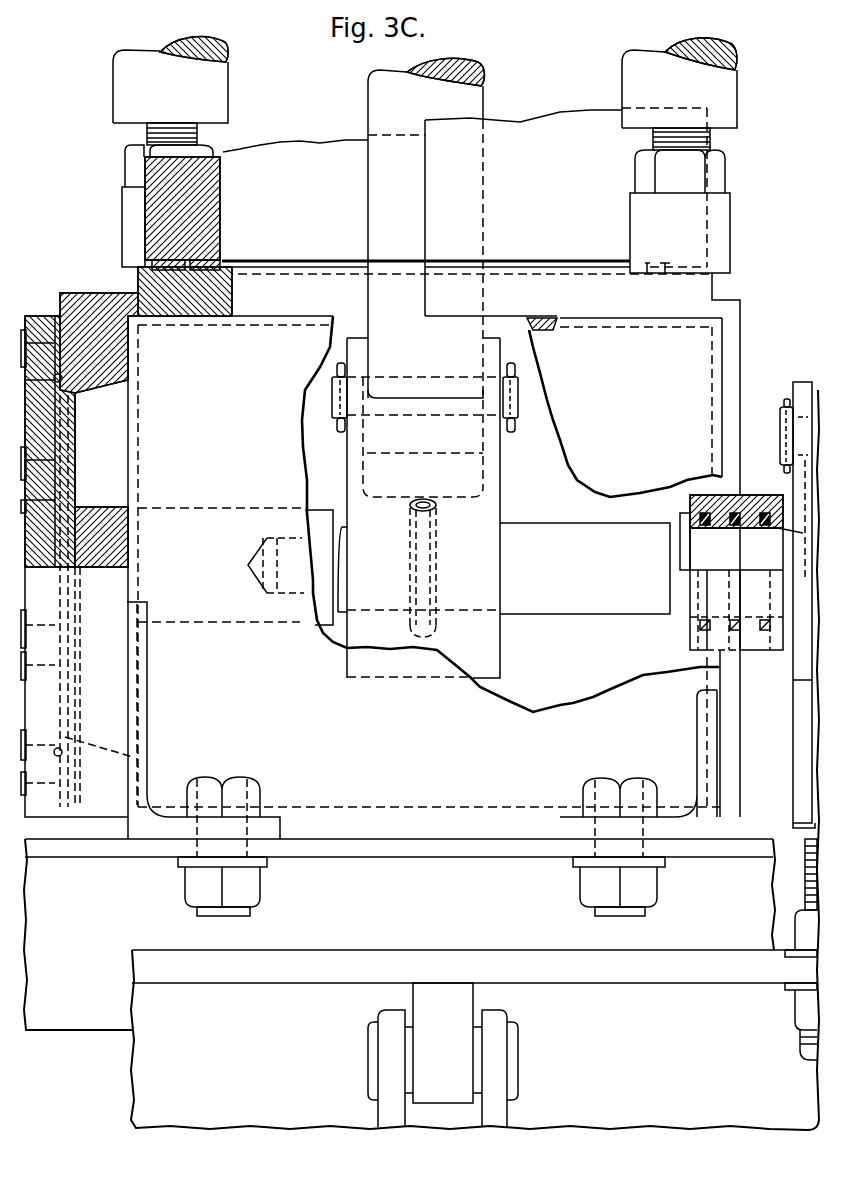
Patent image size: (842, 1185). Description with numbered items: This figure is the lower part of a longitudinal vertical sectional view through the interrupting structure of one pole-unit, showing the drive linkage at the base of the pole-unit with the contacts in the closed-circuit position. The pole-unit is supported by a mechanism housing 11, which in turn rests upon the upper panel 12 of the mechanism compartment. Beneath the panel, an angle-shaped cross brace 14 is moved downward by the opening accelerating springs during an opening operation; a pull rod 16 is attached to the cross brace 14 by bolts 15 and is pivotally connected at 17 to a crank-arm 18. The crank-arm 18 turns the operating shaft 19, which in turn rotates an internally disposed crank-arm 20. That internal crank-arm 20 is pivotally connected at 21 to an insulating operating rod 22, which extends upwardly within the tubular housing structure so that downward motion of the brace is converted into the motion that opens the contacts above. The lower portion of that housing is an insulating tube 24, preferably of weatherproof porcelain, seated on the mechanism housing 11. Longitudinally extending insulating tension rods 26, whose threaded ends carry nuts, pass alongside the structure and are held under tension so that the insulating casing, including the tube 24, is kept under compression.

The mechanism housing 11 is at (110, 291).
The upper panel 12 is at (453, 861).
The angle-shaped cross brace 14 is at (685, 978).
The bolts 15 is at (806, 855).
The pull rod 16 is at (807, 733).
The pivotal connection 17 is at (782, 433).
The crank-arm 18 is at (803, 478).
The operating shaft 19 is at (617, 613).
The internally disposed crank-arm 20 is at (493, 466).
The pivotal connection 21 is at (335, 413).
The insulating operating rod 22 is at (467, 101).
The insulating tube 24 is at (567, 128).
The tension rods 26 is at (218, 90).